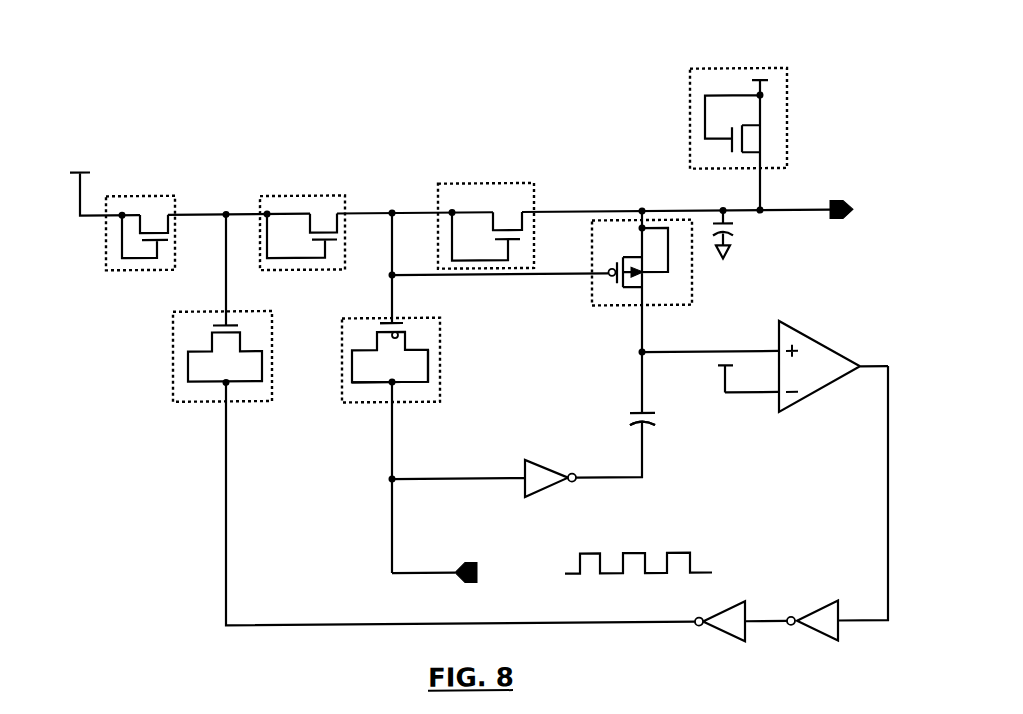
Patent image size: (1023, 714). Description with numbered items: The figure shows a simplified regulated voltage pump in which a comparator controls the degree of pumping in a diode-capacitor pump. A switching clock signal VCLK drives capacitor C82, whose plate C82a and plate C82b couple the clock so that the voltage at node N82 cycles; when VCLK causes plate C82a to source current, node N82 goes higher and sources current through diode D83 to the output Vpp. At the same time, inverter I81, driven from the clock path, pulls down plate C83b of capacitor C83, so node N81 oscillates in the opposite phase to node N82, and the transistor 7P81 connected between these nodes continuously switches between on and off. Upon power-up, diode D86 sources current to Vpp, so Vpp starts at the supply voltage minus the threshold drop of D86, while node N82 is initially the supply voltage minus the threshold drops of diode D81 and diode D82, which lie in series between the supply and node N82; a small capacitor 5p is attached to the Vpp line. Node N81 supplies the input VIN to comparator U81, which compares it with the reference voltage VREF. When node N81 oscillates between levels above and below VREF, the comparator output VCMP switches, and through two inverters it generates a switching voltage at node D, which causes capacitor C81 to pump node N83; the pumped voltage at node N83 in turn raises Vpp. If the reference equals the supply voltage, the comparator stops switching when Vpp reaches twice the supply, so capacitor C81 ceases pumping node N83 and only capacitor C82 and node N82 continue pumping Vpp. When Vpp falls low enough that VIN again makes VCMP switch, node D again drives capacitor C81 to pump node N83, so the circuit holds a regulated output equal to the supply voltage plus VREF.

The diode D81 is at (141, 194).
The diode D82 is at (305, 195).
The diode D83 is at (500, 184).
The diode D86 is at (688, 116).
The node N83 is at (225, 210).
The node N82 is at (391, 211).
The node N81 is at (640, 352).
The transistor 7P81 is at (590, 291).
The capacitor 5p is at (741, 233).
The pumped output voltage Vpp is at (873, 214).
The comparator U81 is at (818, 339).
The comparator input voltage VIN is at (710, 338).
The reference voltage VREF is at (716, 384).
The capacitor C83 is at (615, 441).
The plate of capacitor C83 C83b is at (652, 428).
The inverter I81 is at (548, 461).
The capacitor C81 is at (172, 340).
The capacitor C82 is at (440, 350).
The plate of capacitor C82 C82a is at (398, 323).
The plate of capacitor C82 C82b is at (428, 370).
The switching clock signal VCLK is at (552, 571).
The comparator output voltage VCMP is at (899, 493).
The node D is at (228, 523).